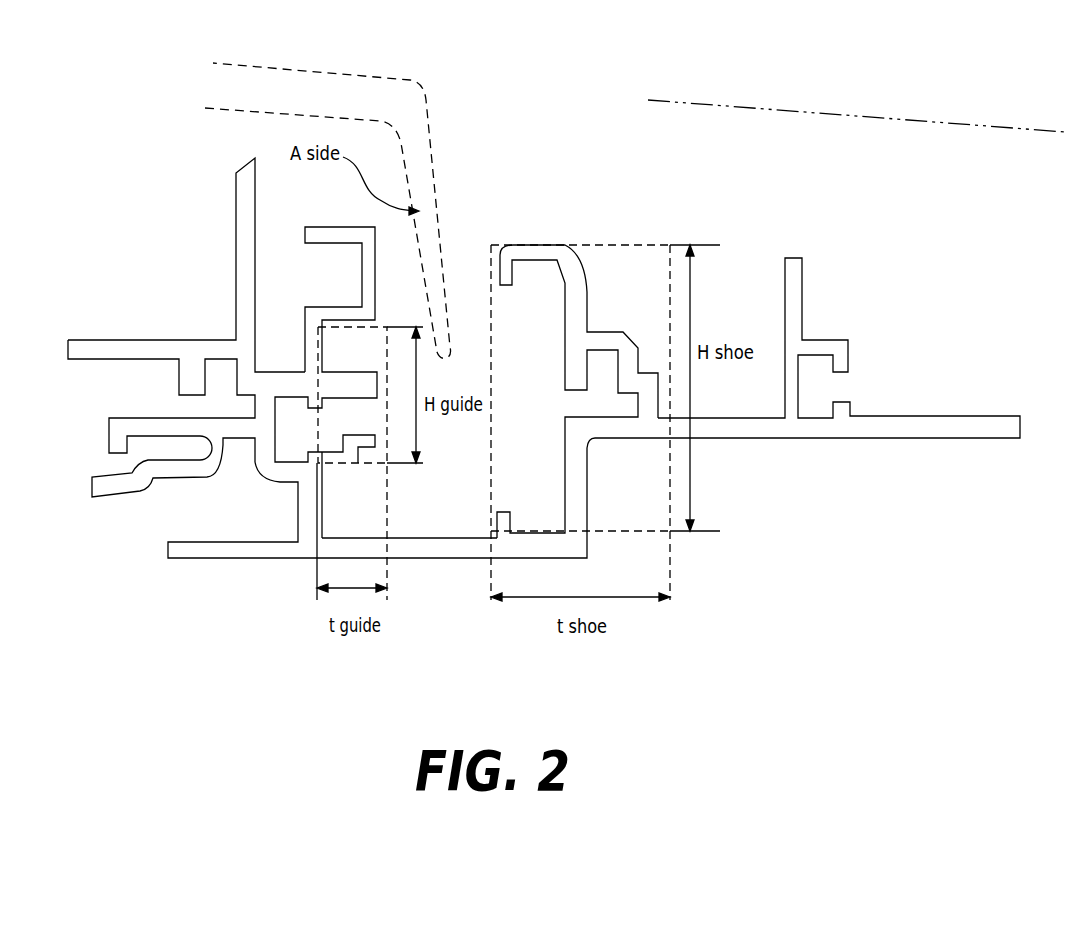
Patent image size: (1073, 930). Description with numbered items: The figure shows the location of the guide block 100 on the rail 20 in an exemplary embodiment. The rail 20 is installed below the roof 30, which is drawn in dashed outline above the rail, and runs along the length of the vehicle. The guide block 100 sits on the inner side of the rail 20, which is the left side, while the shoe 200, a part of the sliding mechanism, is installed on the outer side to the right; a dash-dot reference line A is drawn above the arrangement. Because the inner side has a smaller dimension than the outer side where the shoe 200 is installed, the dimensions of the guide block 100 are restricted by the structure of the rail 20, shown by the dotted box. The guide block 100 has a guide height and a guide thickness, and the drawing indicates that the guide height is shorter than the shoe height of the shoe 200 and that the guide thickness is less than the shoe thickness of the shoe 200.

The rail 20 is at (913, 436).
The roof 30 is at (240, 89).
The guide block 100 is at (318, 358).
The shoe 200 is at (648, 245).
The A side reference line A is at (825, 109).